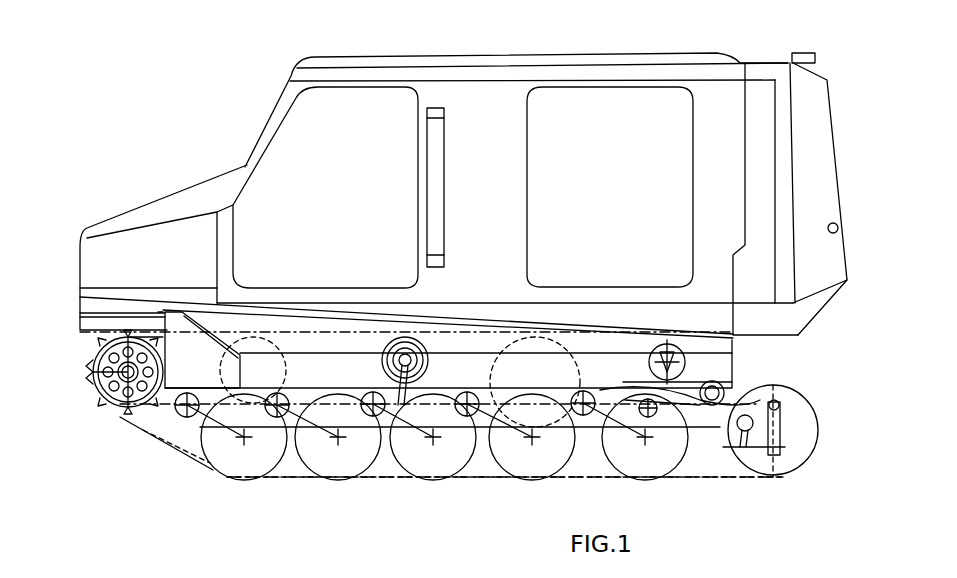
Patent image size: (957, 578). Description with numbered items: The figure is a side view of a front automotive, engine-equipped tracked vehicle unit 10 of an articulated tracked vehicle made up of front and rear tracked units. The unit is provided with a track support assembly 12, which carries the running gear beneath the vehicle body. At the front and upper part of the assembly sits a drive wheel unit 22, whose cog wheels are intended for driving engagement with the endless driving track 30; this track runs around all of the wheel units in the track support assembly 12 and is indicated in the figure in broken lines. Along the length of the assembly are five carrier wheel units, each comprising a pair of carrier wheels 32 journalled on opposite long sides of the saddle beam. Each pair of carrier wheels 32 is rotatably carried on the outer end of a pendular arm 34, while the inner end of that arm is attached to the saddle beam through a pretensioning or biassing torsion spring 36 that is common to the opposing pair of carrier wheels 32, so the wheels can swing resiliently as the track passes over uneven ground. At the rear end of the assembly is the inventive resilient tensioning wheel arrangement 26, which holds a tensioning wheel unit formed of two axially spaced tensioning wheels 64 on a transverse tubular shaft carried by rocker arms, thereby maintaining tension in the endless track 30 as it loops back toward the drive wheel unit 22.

The front automotive tracked vehicle unit 10 is at (247, 143).
The track support assembly 12 is at (183, 472).
The drive wheel unit 22 is at (97, 412).
The tensioning wheel arrangement 26 is at (760, 385).
The endless driving track 30 is at (598, 478).
The carrier wheels 32 is at (363, 473).
The pendular arm 34 is at (508, 422).
The torsion spring 36 is at (472, 410).
The tensioning wheels 64 is at (788, 458).